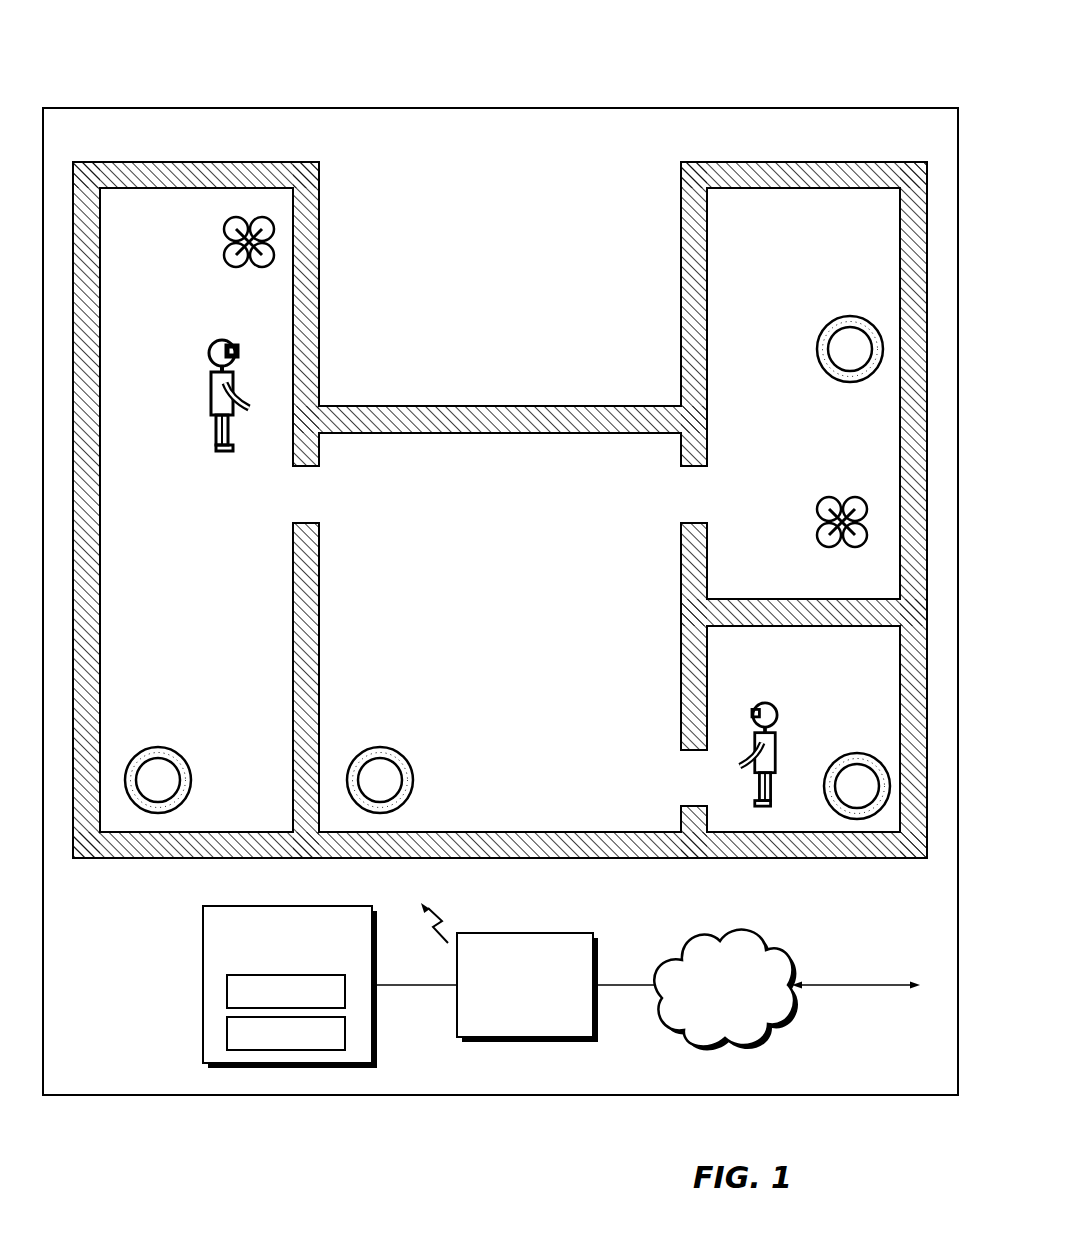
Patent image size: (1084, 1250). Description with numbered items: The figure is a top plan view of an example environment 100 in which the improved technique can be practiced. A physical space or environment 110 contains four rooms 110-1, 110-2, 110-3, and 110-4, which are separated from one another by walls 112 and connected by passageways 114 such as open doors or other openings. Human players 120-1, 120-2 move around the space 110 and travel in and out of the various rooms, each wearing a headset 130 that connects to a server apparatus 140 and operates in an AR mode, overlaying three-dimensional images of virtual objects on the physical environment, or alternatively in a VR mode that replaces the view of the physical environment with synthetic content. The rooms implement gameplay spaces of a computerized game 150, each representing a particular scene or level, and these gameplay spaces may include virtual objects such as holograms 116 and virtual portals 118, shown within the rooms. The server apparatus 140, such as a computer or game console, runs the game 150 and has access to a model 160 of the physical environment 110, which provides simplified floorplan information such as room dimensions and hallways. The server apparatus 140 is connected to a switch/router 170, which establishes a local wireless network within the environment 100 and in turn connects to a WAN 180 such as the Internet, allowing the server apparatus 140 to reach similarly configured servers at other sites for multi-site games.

The environment 100 is at (832, 68).
The physical space 110 is at (525, 254).
The room 110-1 is at (147, 682).
The room 110-2 is at (457, 682).
The room 110-3 is at (763, 270).
The room 110-4 is at (763, 680).
The wall 112 is at (521, 406).
The passageway 114 is at (330, 495).
The hologram 116 is at (234, 231).
The virtual portal 118 is at (192, 771).
The human player 120-1 is at (196, 378).
The human player 120-2 is at (716, 771).
The headset 130 is at (233, 346).
The server apparatus 140 is at (362, 966).
The computerized game 150 is at (341, 1002).
The model 160 is at (341, 1044).
The switch/router 170 is at (586, 1009).
The WAN 180 is at (741, 1021).